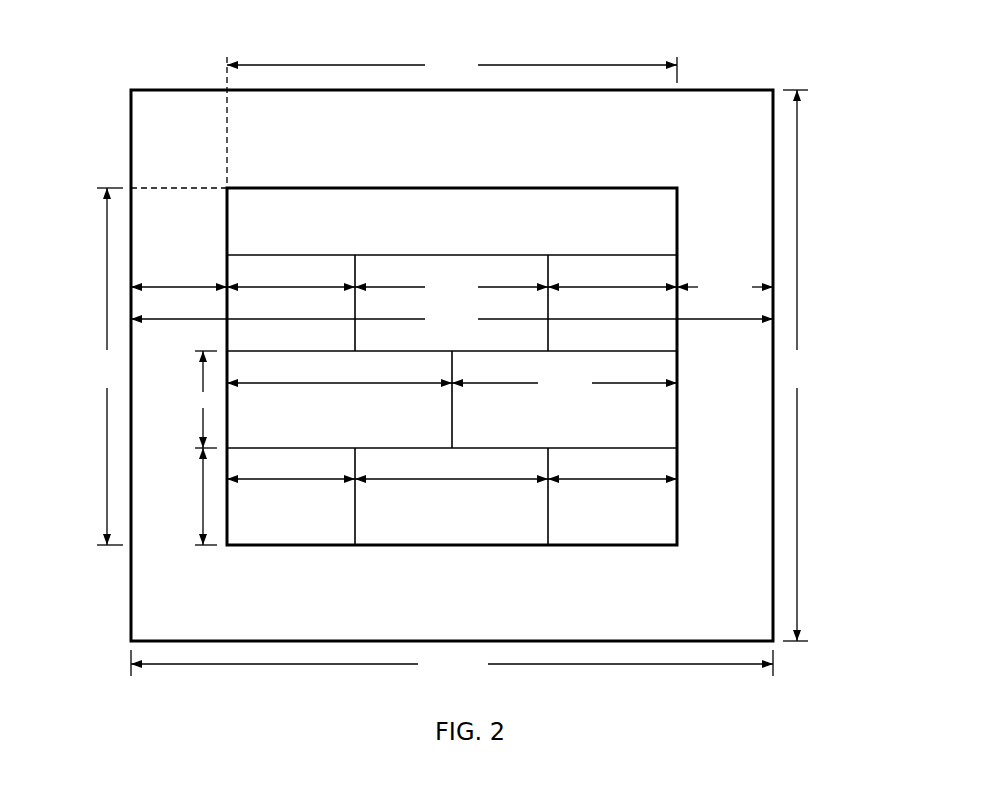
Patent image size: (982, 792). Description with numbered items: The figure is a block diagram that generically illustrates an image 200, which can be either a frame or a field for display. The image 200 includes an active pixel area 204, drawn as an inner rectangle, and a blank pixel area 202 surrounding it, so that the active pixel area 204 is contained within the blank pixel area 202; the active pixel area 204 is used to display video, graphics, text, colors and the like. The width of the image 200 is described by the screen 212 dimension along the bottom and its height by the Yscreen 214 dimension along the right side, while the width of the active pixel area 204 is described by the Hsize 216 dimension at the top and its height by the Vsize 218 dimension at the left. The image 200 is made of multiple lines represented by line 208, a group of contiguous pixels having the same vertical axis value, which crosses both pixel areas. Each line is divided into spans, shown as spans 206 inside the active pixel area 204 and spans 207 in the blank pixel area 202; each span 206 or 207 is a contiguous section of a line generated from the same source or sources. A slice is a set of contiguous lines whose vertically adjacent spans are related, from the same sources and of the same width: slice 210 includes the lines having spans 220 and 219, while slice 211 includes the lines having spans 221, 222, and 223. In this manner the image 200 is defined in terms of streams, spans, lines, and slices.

The image 200 is at (802, 664).
The blank pixel area 202 is at (752, 575).
The active pixel area 204 is at (583, 196).
The span 206 is at (302, 286).
The span 207 is at (168, 286).
The line 208 is at (182, 320).
The slice 210 is at (203, 430).
The slice 211 is at (203, 492).
The screen 212 is at (668, 665).
The Yscreen 214 is at (797, 480).
The Hsize 216 is at (600, 63).
The Vsize 218 is at (106, 251).
The span 219 is at (635, 385).
The span 220 is at (340, 385).
The span 221 is at (325, 481).
The span 222 is at (478, 481).
The span 223 is at (637, 481).